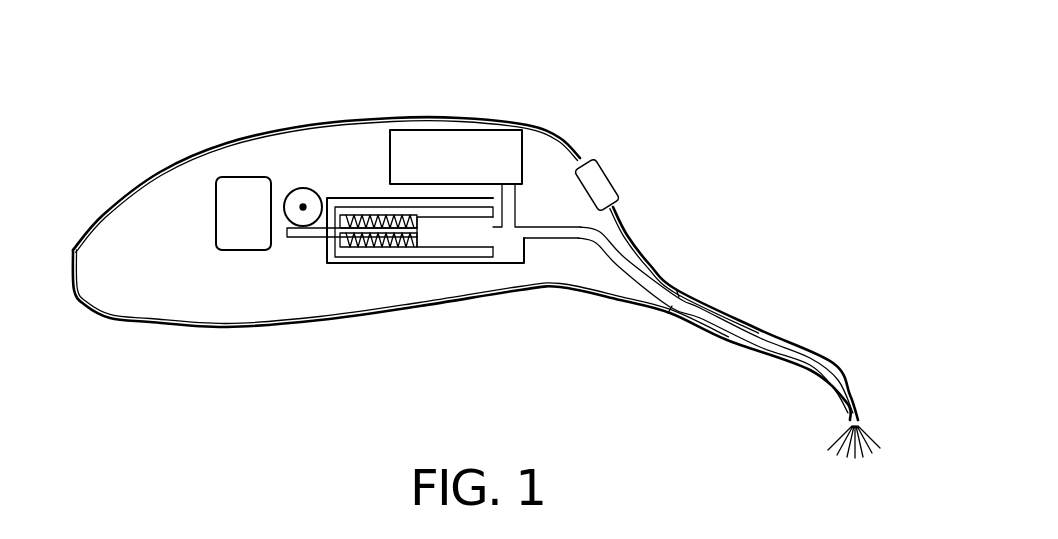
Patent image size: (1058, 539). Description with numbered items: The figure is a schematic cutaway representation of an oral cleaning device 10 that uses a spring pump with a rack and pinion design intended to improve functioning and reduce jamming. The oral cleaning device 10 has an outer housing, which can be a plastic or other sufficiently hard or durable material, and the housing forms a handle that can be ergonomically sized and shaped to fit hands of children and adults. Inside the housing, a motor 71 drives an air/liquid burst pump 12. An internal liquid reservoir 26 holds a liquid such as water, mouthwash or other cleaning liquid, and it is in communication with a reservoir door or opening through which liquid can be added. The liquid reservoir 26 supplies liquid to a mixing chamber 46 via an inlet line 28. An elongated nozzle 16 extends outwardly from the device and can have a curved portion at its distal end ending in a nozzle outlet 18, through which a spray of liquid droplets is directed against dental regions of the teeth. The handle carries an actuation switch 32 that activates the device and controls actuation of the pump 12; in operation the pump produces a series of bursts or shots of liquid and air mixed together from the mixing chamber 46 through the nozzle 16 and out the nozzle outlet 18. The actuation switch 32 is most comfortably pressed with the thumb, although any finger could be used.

The oral cleaning device 10 is at (753, 82).
The motor 71 is at (240, 177).
The air/liquid burst pump 12 is at (348, 196).
The liquid reservoir 26 is at (455, 147).
The inlet line 28 is at (516, 204).
The actuation switch 32 is at (607, 180).
The nozzle 16 is at (777, 333).
The mixing chamber 46 is at (513, 233).
The nozzle outlet 18 is at (843, 430).